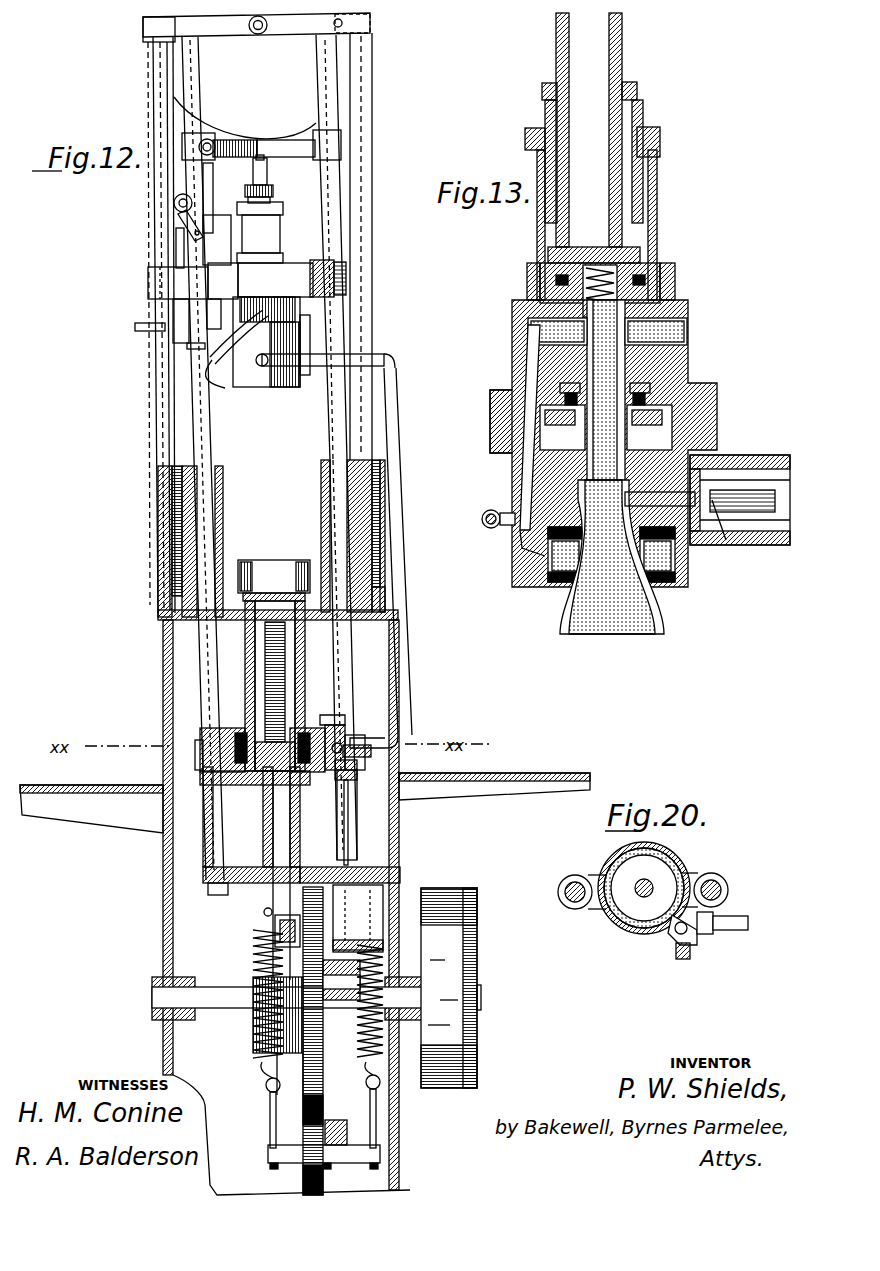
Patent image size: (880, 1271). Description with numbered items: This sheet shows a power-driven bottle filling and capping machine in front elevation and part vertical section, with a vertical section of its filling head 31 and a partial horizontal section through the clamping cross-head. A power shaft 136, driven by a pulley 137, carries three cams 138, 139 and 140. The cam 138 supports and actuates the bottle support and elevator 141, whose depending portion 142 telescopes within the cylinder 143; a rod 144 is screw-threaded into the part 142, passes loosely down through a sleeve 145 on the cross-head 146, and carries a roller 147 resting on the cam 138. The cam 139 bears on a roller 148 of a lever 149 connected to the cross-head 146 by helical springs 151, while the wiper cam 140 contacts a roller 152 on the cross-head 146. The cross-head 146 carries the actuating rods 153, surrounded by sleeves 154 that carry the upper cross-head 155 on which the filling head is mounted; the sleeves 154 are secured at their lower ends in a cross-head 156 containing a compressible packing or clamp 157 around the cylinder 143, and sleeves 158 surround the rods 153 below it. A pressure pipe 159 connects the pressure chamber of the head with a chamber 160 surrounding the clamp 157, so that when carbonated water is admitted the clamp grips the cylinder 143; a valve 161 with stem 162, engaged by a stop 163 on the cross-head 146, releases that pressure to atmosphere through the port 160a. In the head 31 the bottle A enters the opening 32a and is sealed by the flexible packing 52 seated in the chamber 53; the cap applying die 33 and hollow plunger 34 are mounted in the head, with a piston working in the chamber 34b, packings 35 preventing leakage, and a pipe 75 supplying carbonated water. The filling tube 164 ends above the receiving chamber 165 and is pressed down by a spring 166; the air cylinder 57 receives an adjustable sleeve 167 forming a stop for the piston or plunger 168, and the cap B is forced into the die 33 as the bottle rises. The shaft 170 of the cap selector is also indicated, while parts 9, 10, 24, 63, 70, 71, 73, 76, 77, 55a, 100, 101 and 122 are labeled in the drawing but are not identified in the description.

In FIG. 12, the cross head 9 is at (256, 27).
In FIG. 12, the shaft 170 is at (251, 38).
In FIG. 12, the arch 10 is at (245, 114).
In FIG. 12, the actuating rods 153 is at (162, 860).
In FIG. 20, the actuating rods 153 is at (560, 902).
In FIG. 12, the nut 76 is at (212, 140).
In FIG. 12, the cross bar 24 is at (277, 145).
In FIG. 12, the bar 63 is at (219, 198).
In FIG. 12, the piston or plunger 168 is at (267, 172).
In FIG. 13, the piston or plunger 168 is at (663, 247).
In FIG. 12, the adjustable sleeve 167 is at (273, 192).
In FIG. 13, the adjustable sleeve 167 is at (628, 128).
In FIG. 12, the lever 77 is at (174, 206).
In FIG. 12, the air cylinder 57 is at (260, 232).
In FIG. 13, the air cylinder 57 is at (537, 237).
In FIG. 12, the cross-head 155 is at (298, 268).
In FIG. 12, the bar 73 is at (182, 243).
In FIG. 12, the pipe 71 is at (135, 327).
In FIG. 12, the pressure pipe 159 is at (393, 368).
In FIG. 13, the pressure pipe 159 is at (483, 520).
In FIG. 20, the pressure pipe 159 is at (715, 912).
In FIG. 12, the pipe 75 is at (236, 362).
In FIG. 12, the filling head 31 is at (268, 378).
In FIG. 12, the sleeves 154 is at (328, 430).
In FIG. 20, the sleeves 154 is at (560, 880).
In FIG. 12, the cylinder 143 is at (305, 660).
In FIG. 20, the cylinder 143 is at (688, 872).
In FIG. 12, the sleeves 158 is at (208, 800).
In FIG. 12, the bottle support and elevator 141 is at (268, 570).
In FIG. 12, the depending portion 142 is at (275, 686).
In FIG. 12, the compressible packing or clamp 157 is at (235, 742).
In FIG. 20, the compressible packing or clamp 157 is at (662, 856).
In FIG. 12, the cross-head 156 is at (232, 760).
In FIG. 12, the chamber 160 is at (345, 728).
In FIG. 12, the valve 161 is at (345, 745).
In FIG. 20, the valve 161 is at (675, 936).
In FIG. 12, the port 160a is at (335, 772).
In FIG. 20, the port 160a is at (683, 960).
In FIG. 12, the sleeve 145 is at (301, 825).
In FIG. 12, the rod 144 is at (273, 805).
In FIG. 20, the rod 144 is at (638, 896).
In FIG. 12, the valve stem 162 is at (332, 790).
In FIG. 12, the stop 163 is at (342, 855).
In FIG. 12, the cross-head 146 is at (232, 893).
In FIG. 12, the roller 147 is at (280, 930).
In FIG. 12, the roller 152 is at (360, 905).
In FIG. 12, the power shaft 136 is at (210, 992).
In FIG. 12, the pulley 137 is at (451, 988).
In FIG. 12, the cam 138 is at (258, 1030).
In FIG. 12, the cam 139 is at (310, 1050).
In FIG. 12, the wiper cam 140 is at (342, 1027).
In FIG. 12, the helical springs 151 is at (262, 1070).
In FIG. 12, the roller 148 is at (300, 1150).
In FIG. 12, the lever 149 is at (336, 1148).
In FIG. 13, the spring 166 is at (628, 273).
In FIG. 13, the body 70 is at (688, 312).
In FIG. 13, the packings 35 is at (505, 413).
In FIG. 13, the receiving chamber 165 is at (625, 322).
In FIG. 13, the filling tube 164 is at (665, 405).
In FIG. 13, the chamber 34b is at (655, 395).
In FIG. 13, the arm 55a is at (530, 367).
In FIG. 13, the hollow plunger 34 is at (560, 478).
In FIG. 13, the cap applying die 33 is at (560, 492).
In FIG. 13, the bottle A is at (638, 634).
In FIG. 13, the chamber 53 is at (545, 590).
In FIG. 13, the flexible clamping and packing member 52 is at (560, 588).
In FIG. 13, the opening 32a is at (655, 580).
In FIG. 13, the fitting 100 is at (740, 507).
In FIG. 13, the passage 101 is at (745, 497).
In FIG. 13, the cap B is at (670, 490).
In FIG. 13, the port 122 is at (729, 530).